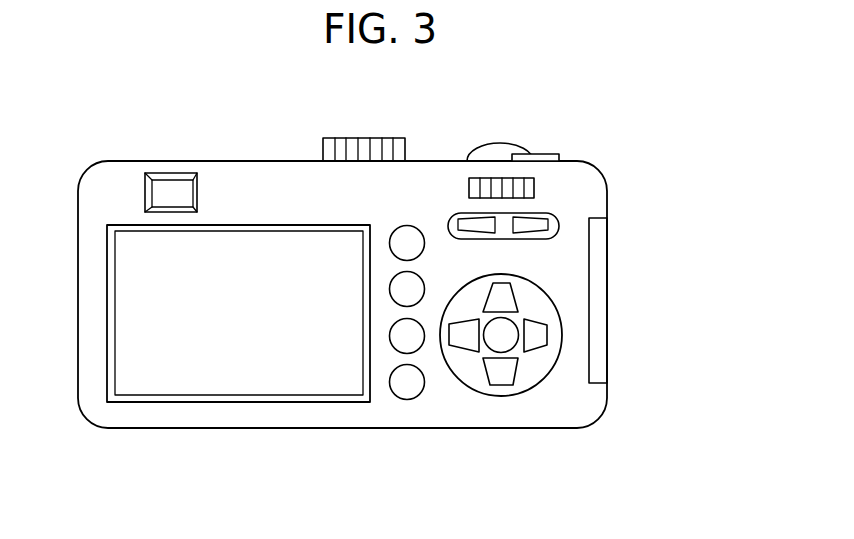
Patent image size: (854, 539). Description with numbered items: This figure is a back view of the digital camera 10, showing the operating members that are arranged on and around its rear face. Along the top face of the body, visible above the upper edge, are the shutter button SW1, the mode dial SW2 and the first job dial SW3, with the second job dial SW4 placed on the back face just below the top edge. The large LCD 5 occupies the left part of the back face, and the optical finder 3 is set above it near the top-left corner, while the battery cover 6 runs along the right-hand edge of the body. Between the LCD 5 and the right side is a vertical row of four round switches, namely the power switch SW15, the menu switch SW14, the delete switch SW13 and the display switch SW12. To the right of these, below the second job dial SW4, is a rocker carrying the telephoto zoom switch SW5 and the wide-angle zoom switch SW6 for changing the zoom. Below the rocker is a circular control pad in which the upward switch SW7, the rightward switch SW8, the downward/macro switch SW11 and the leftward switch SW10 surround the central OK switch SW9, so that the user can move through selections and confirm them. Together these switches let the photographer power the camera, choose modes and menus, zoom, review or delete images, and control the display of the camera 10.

The optical finder 3 is at (166, 174).
The LCD 5 is at (150, 380).
The battery cover 6 is at (597, 278).
The digital camera 10 is at (756, 215).
The shutter button SW1 is at (542, 153).
The mode dial SW2 is at (375, 137).
The first job dial SW3 is at (495, 142).
The second job dial SW4 is at (535, 182).
The telephoto zoom switch SW5 is at (537, 216).
The wide-angle zoom switch SW6 is at (482, 228).
The upward switch SW7 is at (502, 295).
The rightward switch SW8 is at (542, 335).
The OK switch SW9 is at (505, 340).
The leftward switch SW10 is at (463, 342).
The downward/macro switch SW11 is at (502, 385).
The display switch SW12 is at (410, 387).
The delete switch SW13 is at (405, 337).
The menu switch SW14 is at (407, 289).
The power switch SW15 is at (407, 243).